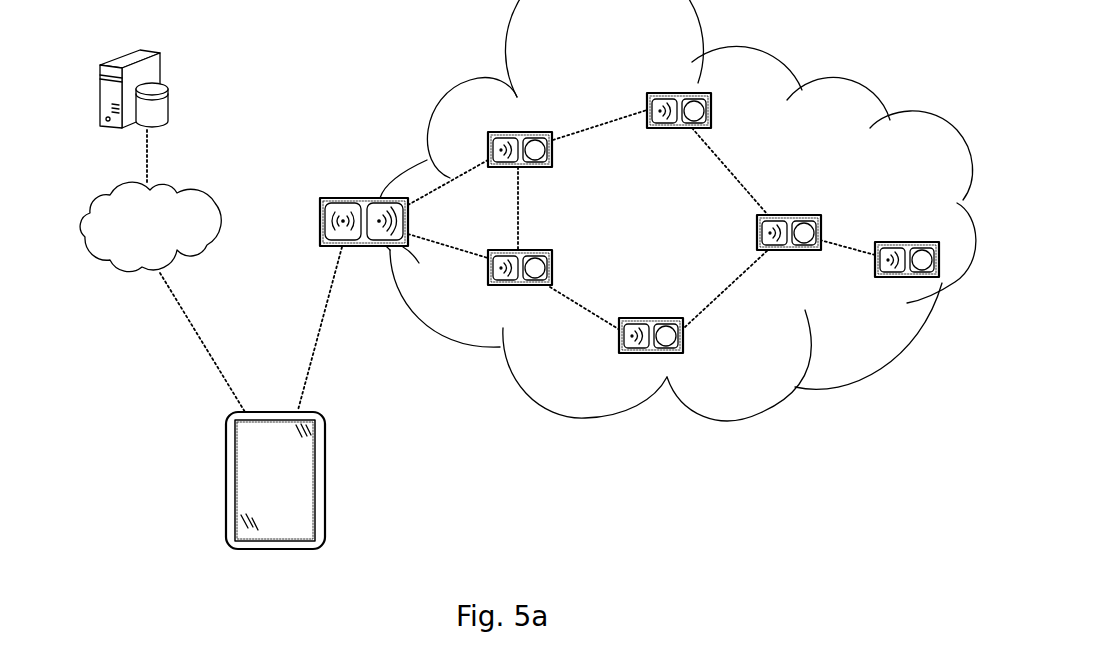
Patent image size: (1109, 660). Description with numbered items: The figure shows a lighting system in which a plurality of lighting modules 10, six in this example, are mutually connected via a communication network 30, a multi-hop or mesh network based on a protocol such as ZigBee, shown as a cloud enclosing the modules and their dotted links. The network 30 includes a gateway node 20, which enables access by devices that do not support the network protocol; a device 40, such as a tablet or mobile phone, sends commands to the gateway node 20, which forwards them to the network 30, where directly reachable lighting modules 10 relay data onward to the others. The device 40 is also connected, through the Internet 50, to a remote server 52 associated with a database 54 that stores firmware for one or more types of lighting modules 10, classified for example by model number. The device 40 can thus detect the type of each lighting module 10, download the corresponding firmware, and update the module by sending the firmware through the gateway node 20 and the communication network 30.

The lighting module 10 is at (542, 132).
The gateway node 20 is at (342, 198).
The communication network 30 is at (876, 80).
The device 40 is at (310, 413).
The Internet 50 is at (117, 270).
The remote server 52 is at (118, 57).
The database 54 is at (162, 129).